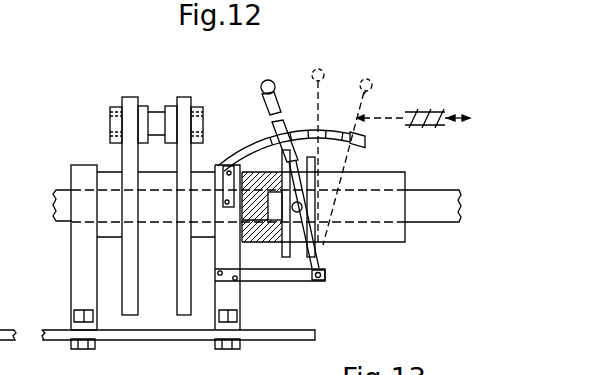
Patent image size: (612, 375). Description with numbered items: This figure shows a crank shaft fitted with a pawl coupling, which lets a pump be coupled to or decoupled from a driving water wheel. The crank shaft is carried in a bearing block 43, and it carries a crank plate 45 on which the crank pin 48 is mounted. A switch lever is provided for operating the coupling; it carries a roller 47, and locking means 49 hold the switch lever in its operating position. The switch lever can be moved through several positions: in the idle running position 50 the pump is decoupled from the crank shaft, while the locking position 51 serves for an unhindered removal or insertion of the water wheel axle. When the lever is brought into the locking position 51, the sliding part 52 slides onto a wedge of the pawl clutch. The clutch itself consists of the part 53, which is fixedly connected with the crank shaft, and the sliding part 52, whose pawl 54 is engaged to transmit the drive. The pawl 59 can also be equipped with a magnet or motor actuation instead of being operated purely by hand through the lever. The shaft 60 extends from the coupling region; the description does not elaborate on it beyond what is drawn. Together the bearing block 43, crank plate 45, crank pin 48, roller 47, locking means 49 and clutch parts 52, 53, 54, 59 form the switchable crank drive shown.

The bearing block 43 is at (82, 285).
The crank plate 45 is at (130, 160).
The roller 47 is at (302, 212).
The crank pin 48 is at (153, 118).
The locking means 49 is at (278, 143).
The idle running position 50 is at (318, 132).
The locking position 51 is at (355, 132).
The sliding part 52 is at (367, 182).
The fixed part of the pawl clutch 53 is at (248, 173).
The pawl 54 is at (273, 212).
The pawl 59 is at (438, 104).
The shaft 60 is at (428, 200).